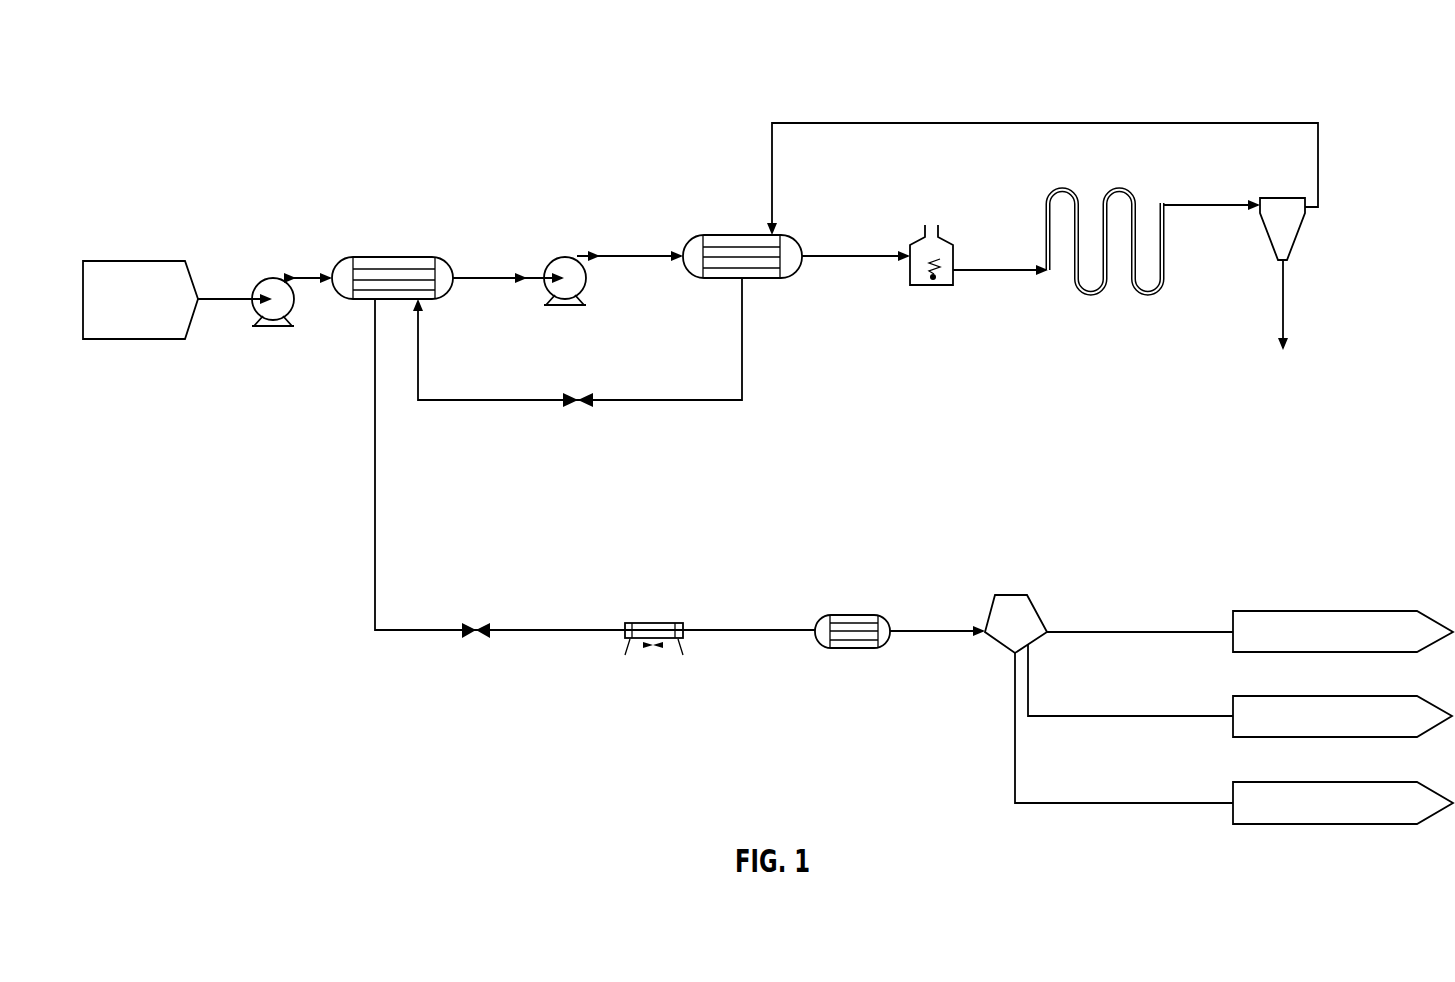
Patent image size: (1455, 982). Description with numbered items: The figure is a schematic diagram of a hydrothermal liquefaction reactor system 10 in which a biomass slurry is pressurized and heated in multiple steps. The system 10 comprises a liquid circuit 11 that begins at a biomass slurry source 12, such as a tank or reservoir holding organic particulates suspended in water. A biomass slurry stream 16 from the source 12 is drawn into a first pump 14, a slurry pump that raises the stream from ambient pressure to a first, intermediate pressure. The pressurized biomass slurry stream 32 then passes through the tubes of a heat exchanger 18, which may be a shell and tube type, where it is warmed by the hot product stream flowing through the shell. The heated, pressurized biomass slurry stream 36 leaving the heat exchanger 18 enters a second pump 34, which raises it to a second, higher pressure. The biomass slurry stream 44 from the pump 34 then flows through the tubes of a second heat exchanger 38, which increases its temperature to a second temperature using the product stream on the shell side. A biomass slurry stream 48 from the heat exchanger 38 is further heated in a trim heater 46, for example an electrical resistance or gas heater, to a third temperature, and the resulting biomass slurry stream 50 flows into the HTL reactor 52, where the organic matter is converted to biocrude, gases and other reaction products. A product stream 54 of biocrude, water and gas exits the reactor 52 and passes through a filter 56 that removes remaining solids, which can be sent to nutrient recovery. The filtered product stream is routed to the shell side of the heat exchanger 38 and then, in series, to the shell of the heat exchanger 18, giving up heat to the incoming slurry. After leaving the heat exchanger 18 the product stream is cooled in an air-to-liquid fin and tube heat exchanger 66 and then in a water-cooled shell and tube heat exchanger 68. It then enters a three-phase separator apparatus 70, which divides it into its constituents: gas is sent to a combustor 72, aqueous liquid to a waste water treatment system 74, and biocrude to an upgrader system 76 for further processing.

The HTL reactor system 10 is at (472, 84).
The liquid circuit 11 is at (651, 96).
The biomass slurry source 12 is at (132, 260).
The first pump 14 is at (272, 277).
The biomass slurry stream 16 is at (233, 297).
The heat exchanger 18 is at (440, 257).
The biomass slurry stream 32 is at (310, 278).
The second pump 34 is at (562, 258).
The biomass slurry stream 36 is at (493, 278).
The second heat exchanger 38 is at (695, 235).
The biomass slurry stream 44 is at (632, 256).
The trim heater 46 is at (946, 240).
The biomass slurry stream 48 is at (856, 256).
The biomass slurry stream 50 is at (995, 270).
The HTL reactor 52 is at (1120, 190).
The product stream 54 is at (1213, 205).
The filter 56 is at (1283, 198).
The air-to-liquid heat exchanger 66 is at (655, 623).
The water-cooled shell and tube heat exchanger 68 is at (853, 615).
The three-phase separator apparatus 70 is at (987, 616).
The combustor 72 is at (1285, 611).
The waste water treatment system 74 is at (1285, 696).
The upgrader system 76 is at (1285, 782).